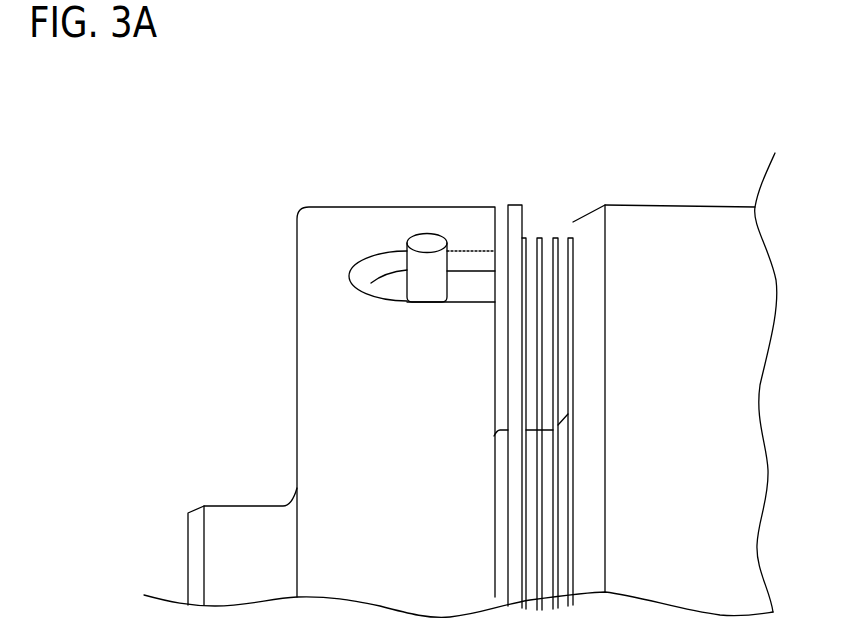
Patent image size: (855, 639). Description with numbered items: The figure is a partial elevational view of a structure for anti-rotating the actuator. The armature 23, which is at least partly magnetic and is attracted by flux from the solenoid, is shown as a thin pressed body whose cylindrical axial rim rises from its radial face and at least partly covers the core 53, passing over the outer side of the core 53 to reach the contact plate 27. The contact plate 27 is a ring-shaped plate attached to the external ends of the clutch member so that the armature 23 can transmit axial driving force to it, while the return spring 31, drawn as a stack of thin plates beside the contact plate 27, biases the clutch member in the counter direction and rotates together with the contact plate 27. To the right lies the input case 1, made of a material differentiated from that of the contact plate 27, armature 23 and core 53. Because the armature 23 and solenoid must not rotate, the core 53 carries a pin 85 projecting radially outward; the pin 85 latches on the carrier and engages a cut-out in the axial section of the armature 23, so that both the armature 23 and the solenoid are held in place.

The input case 1 is at (679, 207).
The armature 23 is at (297, 287).
The contact plate 27 is at (511, 205).
The return spring 31 is at (541, 238).
The core 53 is at (470, 280).
The pin 85 is at (430, 233).